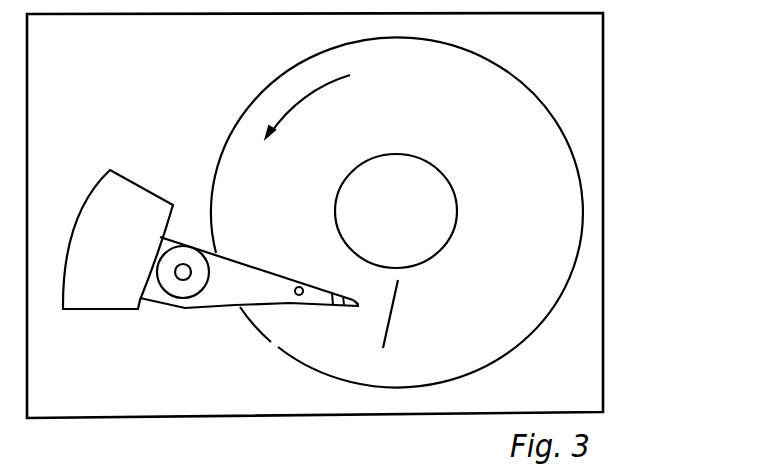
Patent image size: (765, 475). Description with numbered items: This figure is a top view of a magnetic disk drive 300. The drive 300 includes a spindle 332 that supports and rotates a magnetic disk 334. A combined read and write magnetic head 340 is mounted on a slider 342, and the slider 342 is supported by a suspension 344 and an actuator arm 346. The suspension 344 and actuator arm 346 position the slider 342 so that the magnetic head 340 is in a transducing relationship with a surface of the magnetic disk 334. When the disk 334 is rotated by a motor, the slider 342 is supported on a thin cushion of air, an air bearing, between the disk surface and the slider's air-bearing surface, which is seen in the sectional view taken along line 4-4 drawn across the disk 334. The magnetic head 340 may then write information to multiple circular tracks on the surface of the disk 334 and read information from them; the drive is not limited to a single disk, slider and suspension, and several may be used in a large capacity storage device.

The magnetic disk drive 300 is at (628, 39).
The spindle 332 is at (430, 156).
The magnetic disk 334 is at (526, 232).
The combined read and write magnetic head 340 is at (358, 310).
The slider 342 is at (355, 301).
The suspension 344 is at (318, 307).
The actuator arm 346 is at (236, 256).
The section line 4- 4 is at (403, 284).